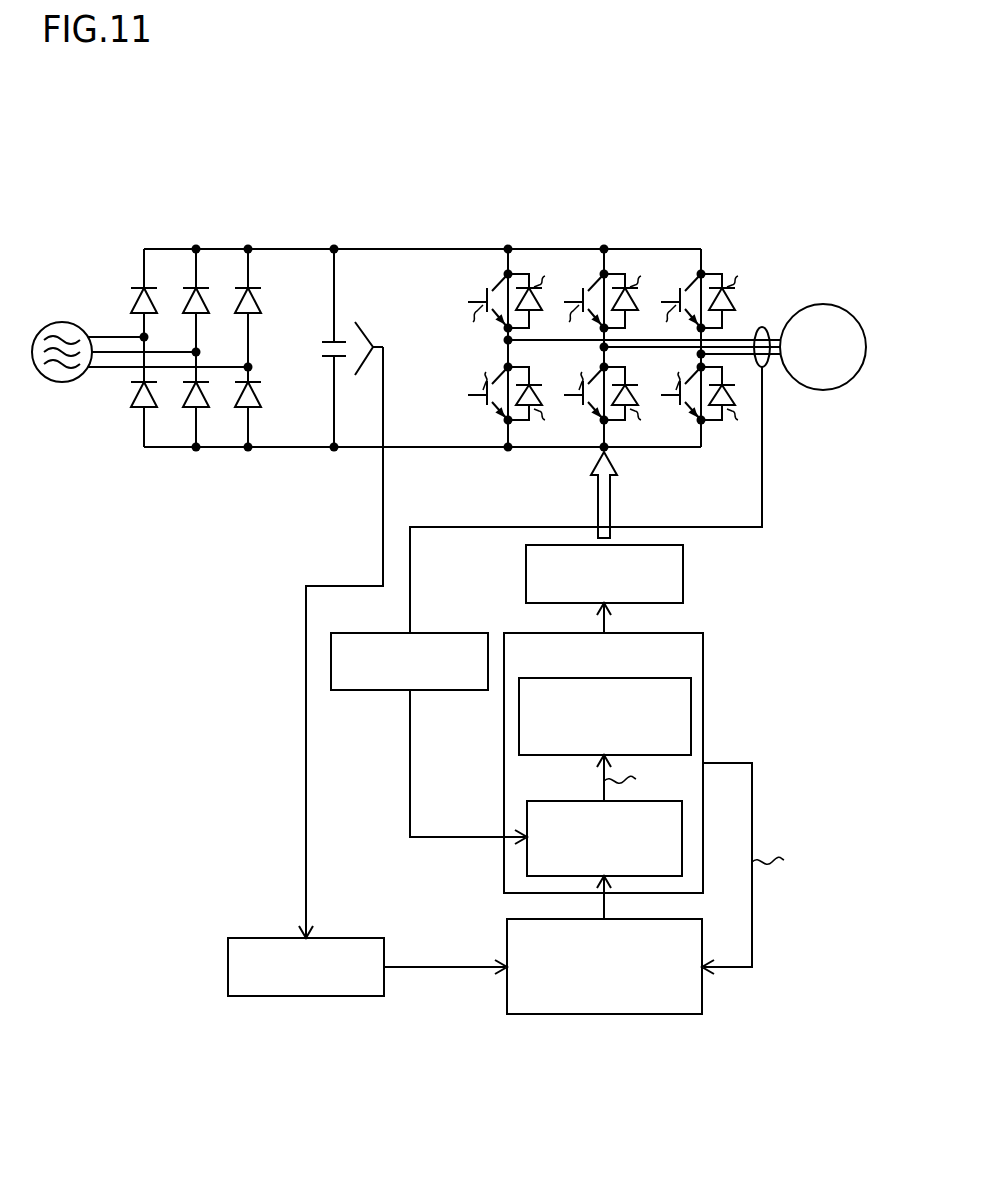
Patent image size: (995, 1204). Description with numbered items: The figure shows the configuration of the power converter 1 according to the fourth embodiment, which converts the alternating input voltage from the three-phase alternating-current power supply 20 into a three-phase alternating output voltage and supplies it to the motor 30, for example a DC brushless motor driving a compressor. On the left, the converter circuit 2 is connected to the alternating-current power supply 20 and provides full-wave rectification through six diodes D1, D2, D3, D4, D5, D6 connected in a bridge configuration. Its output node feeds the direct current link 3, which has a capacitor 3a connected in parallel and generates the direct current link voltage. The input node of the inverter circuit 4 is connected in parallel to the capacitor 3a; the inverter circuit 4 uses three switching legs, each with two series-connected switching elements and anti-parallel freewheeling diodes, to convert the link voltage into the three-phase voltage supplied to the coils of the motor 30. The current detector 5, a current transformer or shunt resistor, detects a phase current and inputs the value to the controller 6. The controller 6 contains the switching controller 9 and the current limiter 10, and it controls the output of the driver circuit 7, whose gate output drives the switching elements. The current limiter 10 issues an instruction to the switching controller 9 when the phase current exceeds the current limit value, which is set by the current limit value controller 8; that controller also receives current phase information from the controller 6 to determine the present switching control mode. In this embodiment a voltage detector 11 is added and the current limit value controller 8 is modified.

The power converter 1 is at (518, 146).
The converter circuit 2 is at (245, 240).
The direct current link 3 is at (380, 240).
The capacitor 3a is at (331, 358).
The inverter circuit 4 is at (635, 240).
The current detector 5 is at (355, 690).
The controller 6 is at (704, 657).
The driver circuit 7 is at (683, 578).
The current limit value controller 8 is at (507, 928).
The switching controller 9 is at (519, 735).
The current limiter 10 is at (527, 859).
The voltage detector 11 is at (228, 959).
The three-phase alternating-current power supply 20 is at (80, 329).
The motor 30 is at (823, 303).
The diode D1 is at (154, 288).
The diode D2 is at (206, 288).
The diode D3 is at (258, 288).
The diode D4 is at (154, 408).
The diode D5 is at (206, 408).
The diode D6 is at (258, 408).